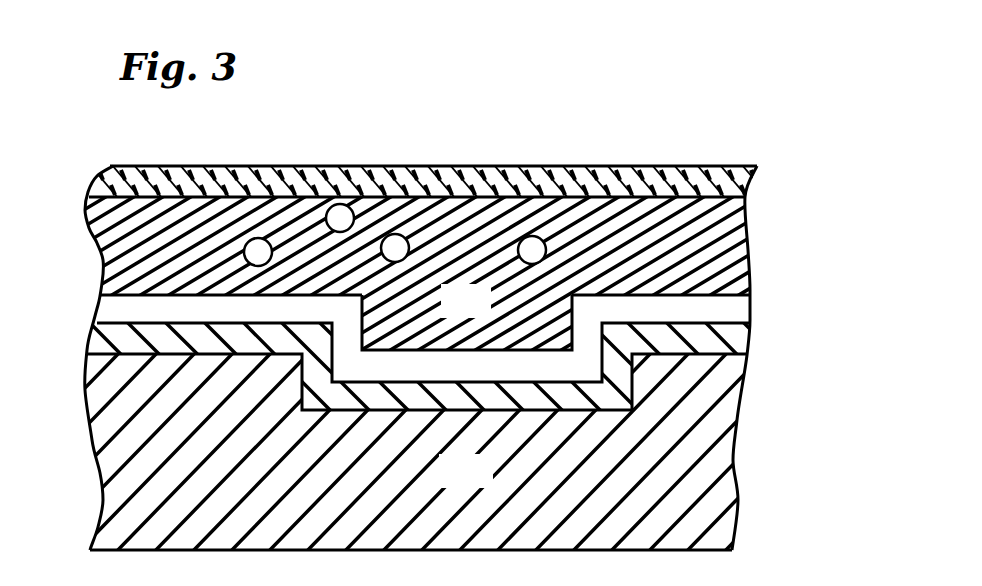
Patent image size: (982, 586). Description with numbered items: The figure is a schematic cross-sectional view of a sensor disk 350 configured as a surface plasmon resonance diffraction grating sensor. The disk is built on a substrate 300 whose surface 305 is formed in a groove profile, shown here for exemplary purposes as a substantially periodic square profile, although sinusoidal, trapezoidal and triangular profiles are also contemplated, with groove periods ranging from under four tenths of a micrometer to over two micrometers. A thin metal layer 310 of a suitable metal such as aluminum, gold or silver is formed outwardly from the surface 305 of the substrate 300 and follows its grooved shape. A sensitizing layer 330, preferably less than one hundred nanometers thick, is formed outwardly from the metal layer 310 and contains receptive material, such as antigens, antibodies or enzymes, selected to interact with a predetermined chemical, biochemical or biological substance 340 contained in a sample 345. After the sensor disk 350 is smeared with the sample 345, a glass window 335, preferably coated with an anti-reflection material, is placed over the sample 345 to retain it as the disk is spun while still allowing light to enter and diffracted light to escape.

The substrate 300 is at (487, 482).
The surface 305 is at (100, 340).
The thin metal layer 310 is at (736, 335).
The sensitizing layer 330 is at (112, 310).
The glass window 335 is at (742, 180).
The substance 340 is at (386, 236).
The sample 345 is at (487, 312).
The sensor disk 350 is at (668, 98).